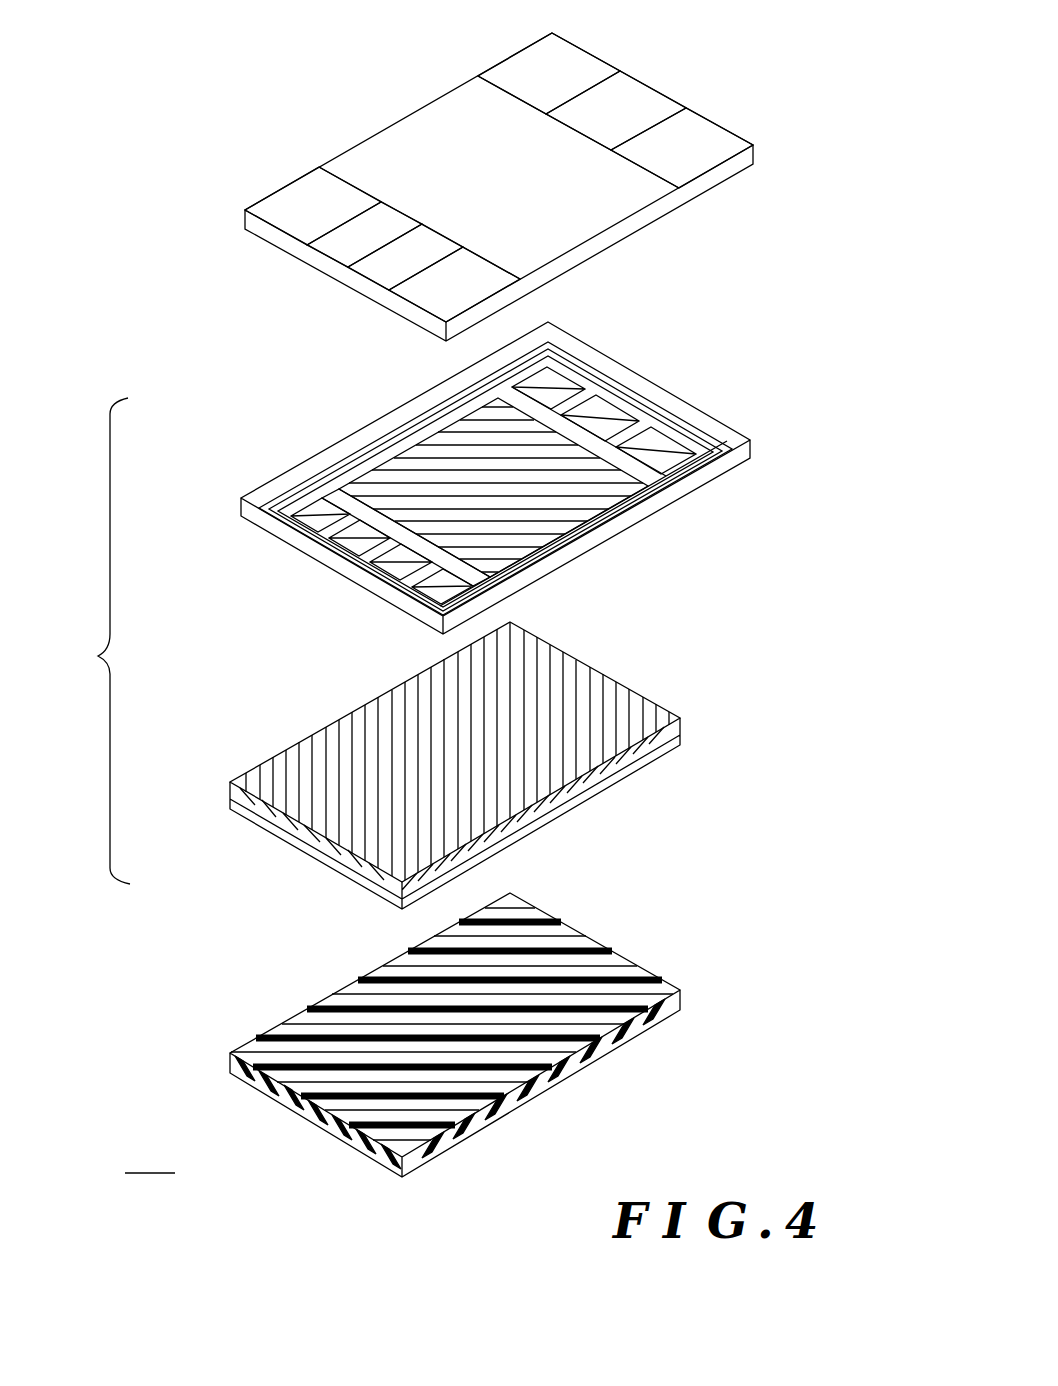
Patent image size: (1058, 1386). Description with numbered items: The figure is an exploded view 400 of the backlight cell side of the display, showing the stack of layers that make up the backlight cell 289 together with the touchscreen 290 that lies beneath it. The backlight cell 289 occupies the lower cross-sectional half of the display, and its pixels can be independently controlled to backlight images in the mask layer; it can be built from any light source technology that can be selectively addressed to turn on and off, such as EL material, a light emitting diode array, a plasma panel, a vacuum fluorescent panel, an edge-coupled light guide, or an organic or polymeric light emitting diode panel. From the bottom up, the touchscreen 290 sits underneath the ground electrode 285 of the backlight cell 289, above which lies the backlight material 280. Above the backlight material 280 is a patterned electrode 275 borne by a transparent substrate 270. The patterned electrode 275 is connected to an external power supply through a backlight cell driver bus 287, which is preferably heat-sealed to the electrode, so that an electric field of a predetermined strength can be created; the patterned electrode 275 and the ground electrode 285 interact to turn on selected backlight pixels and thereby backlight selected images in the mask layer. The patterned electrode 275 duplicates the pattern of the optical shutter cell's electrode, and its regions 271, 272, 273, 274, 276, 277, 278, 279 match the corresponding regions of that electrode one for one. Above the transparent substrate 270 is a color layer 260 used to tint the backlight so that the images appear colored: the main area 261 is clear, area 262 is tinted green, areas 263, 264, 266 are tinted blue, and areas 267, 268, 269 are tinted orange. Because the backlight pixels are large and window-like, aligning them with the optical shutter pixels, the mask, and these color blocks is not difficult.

The color layer 260 is at (395, 140).
The main area 261 is at (460, 103).
The area 262 is at (290, 222).
The area 263 is at (337, 255).
The area 264 is at (385, 278).
The area 266 is at (448, 303).
The area 267 is at (570, 60).
The area 268 is at (638, 97).
The area 269 is at (704, 137).
The transparent substrate 270 is at (412, 425).
The region 271 is at (557, 537).
The region 272 is at (308, 523).
The region 273 is at (353, 548).
The region 274 is at (393, 573).
The patterned electrode 275 is at (612, 493).
The region 276 is at (437, 598).
The region 277 is at (563, 365).
The region 278 is at (603, 407).
The region 279 is at (685, 465).
The backlight material 280 is at (607, 687).
The ground electrode 285 is at (628, 775).
The backlight cell driver bus 287 is at (637, 400).
The backlight cell 289 is at (85, 641).
The touchscreen 290 is at (615, 970).
The exploded view 400 is at (150, 1160).